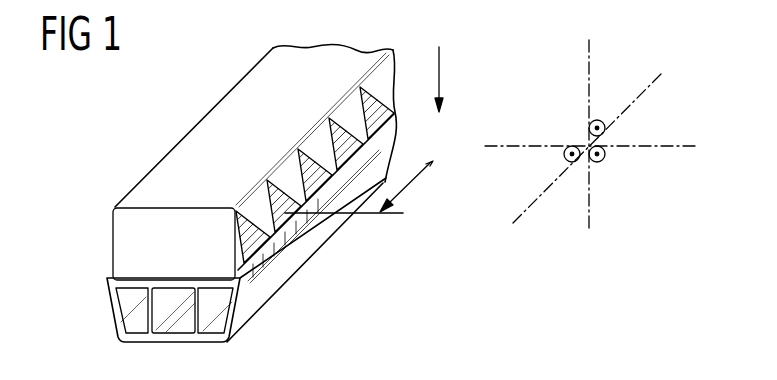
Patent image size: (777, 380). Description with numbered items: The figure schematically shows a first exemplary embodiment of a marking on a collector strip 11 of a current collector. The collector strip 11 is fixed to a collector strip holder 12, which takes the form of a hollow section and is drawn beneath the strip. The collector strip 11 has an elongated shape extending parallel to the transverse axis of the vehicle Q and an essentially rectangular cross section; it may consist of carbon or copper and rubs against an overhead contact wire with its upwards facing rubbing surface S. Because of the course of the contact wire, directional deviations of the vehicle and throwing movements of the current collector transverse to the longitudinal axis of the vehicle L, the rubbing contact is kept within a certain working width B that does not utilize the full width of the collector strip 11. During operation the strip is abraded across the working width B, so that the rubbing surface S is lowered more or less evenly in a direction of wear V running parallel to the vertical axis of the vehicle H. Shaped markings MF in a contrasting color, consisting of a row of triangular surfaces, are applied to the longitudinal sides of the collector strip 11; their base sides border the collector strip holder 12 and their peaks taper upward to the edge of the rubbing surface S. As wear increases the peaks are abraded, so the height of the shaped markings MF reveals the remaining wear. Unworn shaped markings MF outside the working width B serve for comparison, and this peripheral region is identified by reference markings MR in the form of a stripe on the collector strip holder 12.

The collector strip 11 is at (131, 247).
The collector strip holder 12 is at (107, 298).
The rubbing surface S is at (213, 135).
The shaped markings MF is at (298, 210).
The reference markings MR is at (284, 244).
The direction of wear V is at (439, 70).
The working width B is at (417, 183).
The vertical axis of the vehicle H is at (590, 55).
The transverse axis of the vehicle Q is at (653, 85).
The longitudinal axis of the vehicle L is at (680, 147).